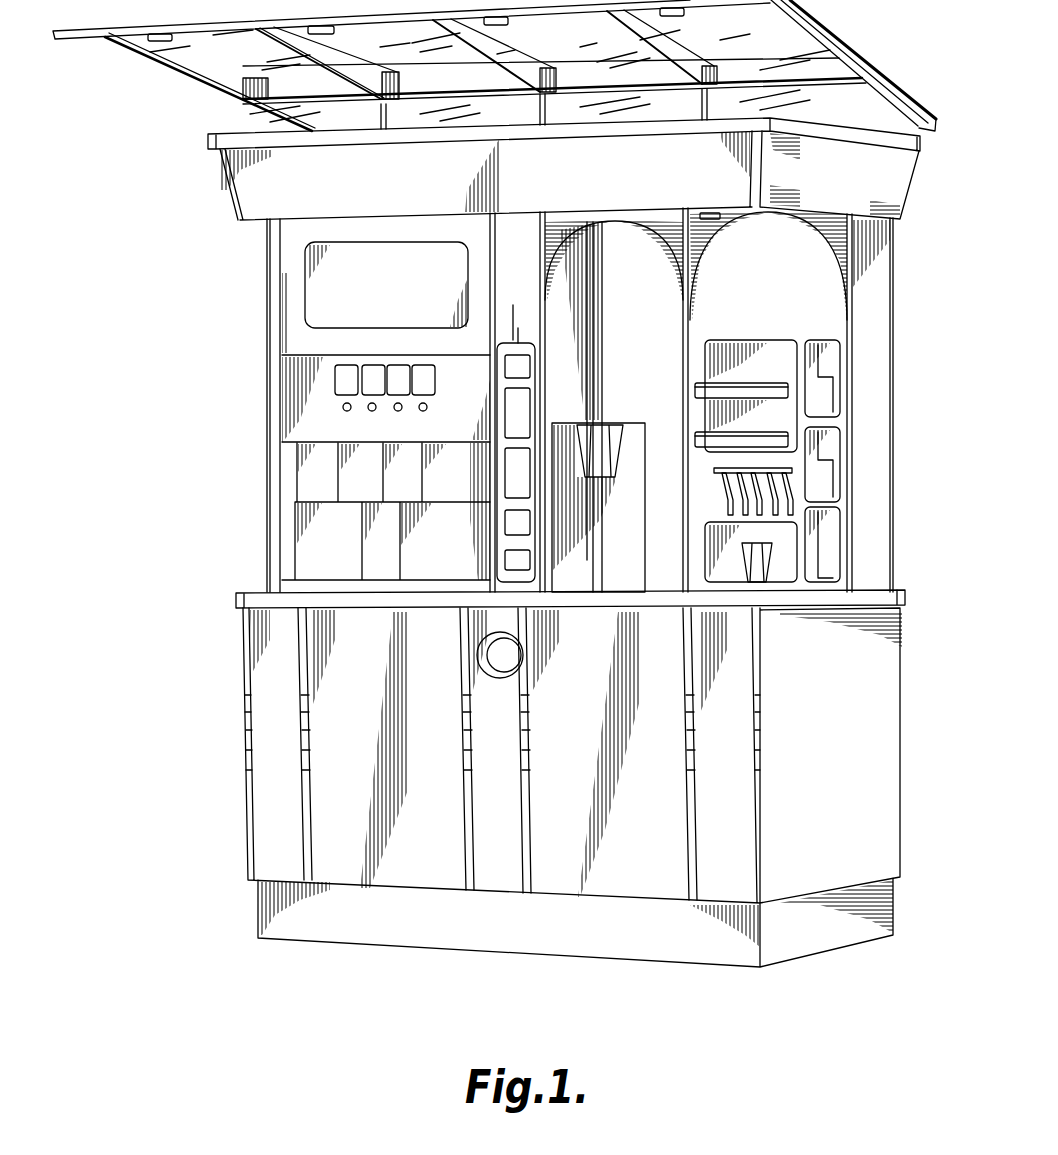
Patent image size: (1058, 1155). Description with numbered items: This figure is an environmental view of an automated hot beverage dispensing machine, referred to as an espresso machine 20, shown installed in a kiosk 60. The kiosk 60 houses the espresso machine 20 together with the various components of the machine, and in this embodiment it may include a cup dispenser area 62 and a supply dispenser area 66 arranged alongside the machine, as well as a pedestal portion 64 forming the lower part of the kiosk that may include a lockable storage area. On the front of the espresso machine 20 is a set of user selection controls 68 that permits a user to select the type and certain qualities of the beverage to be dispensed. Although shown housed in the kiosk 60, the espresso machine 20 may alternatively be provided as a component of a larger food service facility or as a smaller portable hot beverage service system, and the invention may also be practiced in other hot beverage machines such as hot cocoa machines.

The espresso machine 20 is at (494, 483).
The kiosk 60 is at (359, 412).
The cup dispenser area 62 is at (656, 322).
The pedestal portion 64 is at (602, 756).
The supply dispenser area 66 is at (777, 286).
The user selection controls 68 is at (340, 385).